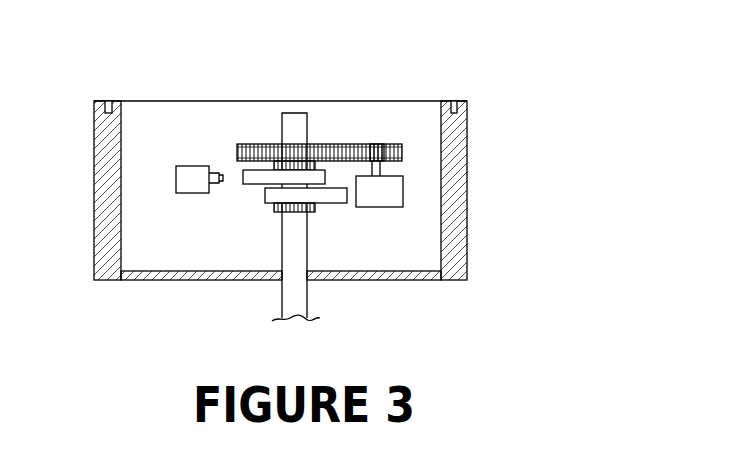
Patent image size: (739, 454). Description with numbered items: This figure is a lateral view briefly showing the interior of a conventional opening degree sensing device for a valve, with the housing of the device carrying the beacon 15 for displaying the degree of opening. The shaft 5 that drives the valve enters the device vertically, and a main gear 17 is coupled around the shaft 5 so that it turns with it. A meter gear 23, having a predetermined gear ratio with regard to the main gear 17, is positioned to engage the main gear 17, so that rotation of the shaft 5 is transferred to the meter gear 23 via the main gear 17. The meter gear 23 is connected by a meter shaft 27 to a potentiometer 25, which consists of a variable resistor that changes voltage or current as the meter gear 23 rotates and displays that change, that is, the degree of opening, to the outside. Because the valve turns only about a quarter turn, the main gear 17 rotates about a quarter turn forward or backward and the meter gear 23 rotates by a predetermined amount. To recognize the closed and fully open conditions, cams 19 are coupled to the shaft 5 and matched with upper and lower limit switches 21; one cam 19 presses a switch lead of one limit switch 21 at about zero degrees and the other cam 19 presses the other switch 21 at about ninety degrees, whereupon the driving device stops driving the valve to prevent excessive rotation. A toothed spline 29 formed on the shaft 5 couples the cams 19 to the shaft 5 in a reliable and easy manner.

The shaft 5 is at (293, 122).
The beacon 15 is at (460, 246).
The main gear 17 is at (333, 152).
The cams 19 is at (337, 197).
The upper and lower limit switches 21 is at (185, 179).
The meter gear 23 is at (397, 148).
The potentiometer 25 is at (395, 195).
The meter shaft 27 is at (376, 146).
The toothed spline 29 is at (279, 206).